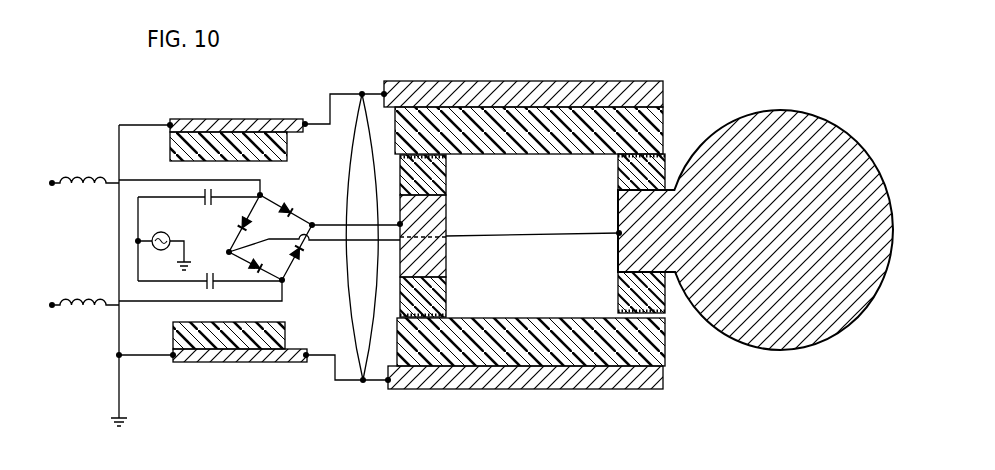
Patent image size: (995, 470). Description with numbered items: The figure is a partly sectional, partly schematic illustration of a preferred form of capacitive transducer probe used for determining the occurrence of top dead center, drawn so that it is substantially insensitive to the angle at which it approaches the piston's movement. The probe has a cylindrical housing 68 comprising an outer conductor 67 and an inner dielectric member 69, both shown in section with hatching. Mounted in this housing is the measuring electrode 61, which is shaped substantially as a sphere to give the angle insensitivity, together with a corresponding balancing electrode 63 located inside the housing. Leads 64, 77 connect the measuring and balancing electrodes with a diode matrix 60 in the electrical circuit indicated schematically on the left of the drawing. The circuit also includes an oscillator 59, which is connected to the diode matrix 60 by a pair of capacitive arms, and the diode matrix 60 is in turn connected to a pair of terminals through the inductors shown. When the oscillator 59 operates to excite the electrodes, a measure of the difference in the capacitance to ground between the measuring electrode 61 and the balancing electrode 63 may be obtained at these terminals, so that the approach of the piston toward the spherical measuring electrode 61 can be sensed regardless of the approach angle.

The oscillator 59 is at (169, 233).
The diode matrix 60 is at (292, 276).
The measuring electrode 61 is at (790, 349).
The balancing electrode 63 is at (447, 216).
The lead 64 is at (526, 235).
The outer conductor 67 is at (545, 85).
The cylindrical housing 68 is at (433, 243).
The inner dielectric member 69 is at (653, 131).
The lead 77 is at (337, 223).